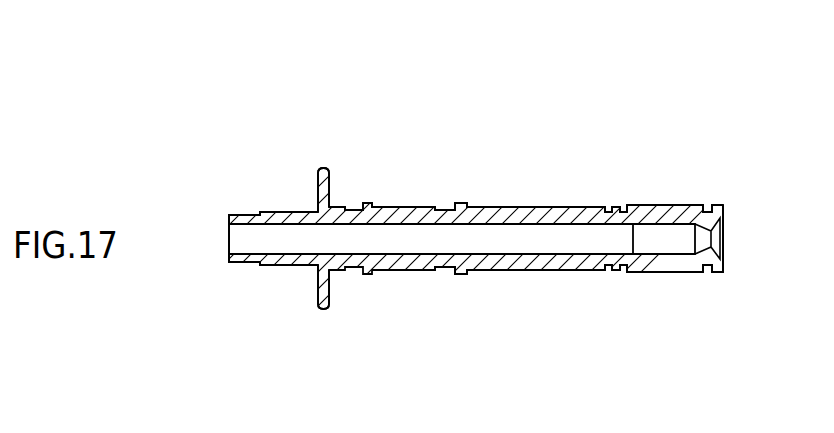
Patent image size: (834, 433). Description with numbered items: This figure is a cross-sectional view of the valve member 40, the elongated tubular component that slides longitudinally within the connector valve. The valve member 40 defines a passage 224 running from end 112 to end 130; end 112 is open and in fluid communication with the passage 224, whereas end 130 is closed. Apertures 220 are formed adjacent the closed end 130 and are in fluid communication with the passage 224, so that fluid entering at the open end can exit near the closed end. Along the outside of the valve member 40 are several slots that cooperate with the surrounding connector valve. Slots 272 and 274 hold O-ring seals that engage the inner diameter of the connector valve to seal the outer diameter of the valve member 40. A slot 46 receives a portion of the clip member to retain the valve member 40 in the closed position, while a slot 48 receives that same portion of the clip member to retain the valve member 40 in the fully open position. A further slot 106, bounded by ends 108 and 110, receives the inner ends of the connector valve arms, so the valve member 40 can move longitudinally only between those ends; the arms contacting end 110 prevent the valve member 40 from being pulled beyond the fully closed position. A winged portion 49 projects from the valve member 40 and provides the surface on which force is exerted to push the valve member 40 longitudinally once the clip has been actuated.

The valve member 40 is at (517, 112).
The slot 46 is at (445, 271).
The slot 48 is at (353, 210).
The winged portion 49 is at (325, 308).
The slot 106 is at (538, 271).
The end of slot 108 is at (470, 205).
The end of slot 110 is at (603, 208).
The end 112 is at (247, 262).
The end 130 is at (722, 231).
The apertures 220 is at (681, 263).
The passage 224 is at (462, 239).
The slot 272 is at (618, 271).
The slot 274 is at (709, 212).